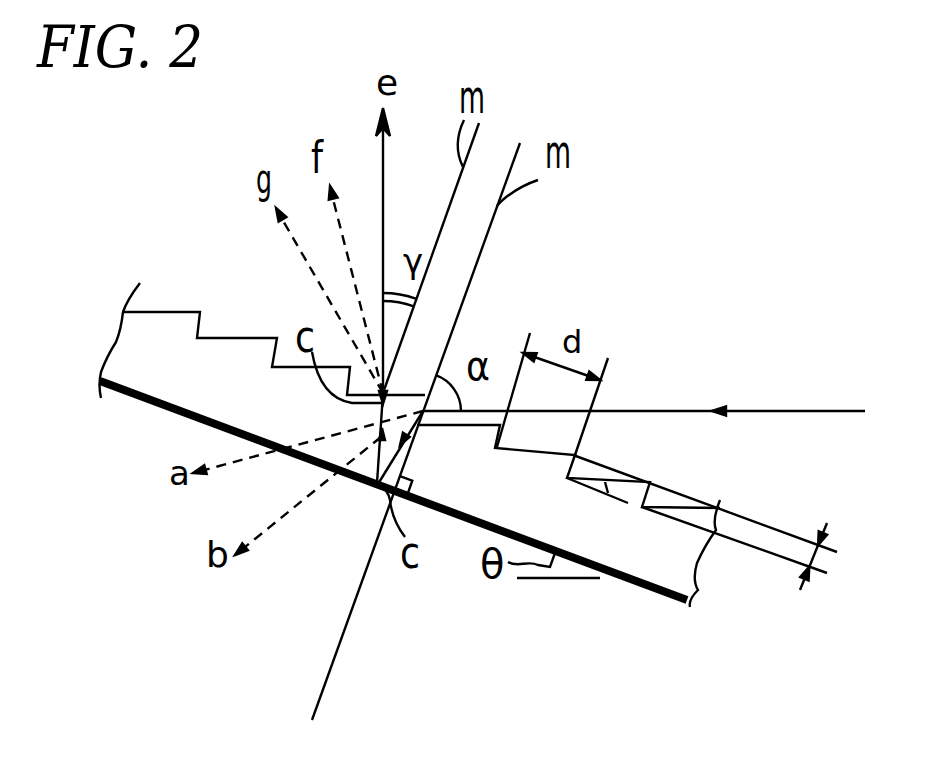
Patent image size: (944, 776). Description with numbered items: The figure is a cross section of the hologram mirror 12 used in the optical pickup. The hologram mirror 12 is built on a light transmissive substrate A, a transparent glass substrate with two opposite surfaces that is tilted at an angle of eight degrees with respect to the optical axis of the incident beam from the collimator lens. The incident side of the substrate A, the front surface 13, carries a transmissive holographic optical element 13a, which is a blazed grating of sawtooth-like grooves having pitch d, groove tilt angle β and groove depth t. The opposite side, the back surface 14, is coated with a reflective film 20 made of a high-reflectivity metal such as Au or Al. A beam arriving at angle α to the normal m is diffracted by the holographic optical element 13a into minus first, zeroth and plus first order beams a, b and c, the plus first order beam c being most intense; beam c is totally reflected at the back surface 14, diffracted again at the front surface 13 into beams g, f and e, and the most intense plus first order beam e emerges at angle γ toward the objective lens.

The hologram mirror 12 is at (700, 570).
The front surface 13 is at (160, 296).
The transmissive holographic optical element 13a is at (228, 340).
The back surface 14 is at (481, 514).
The reflective film 20 is at (433, 513).
The light transmissive substrate A is at (140, 429).